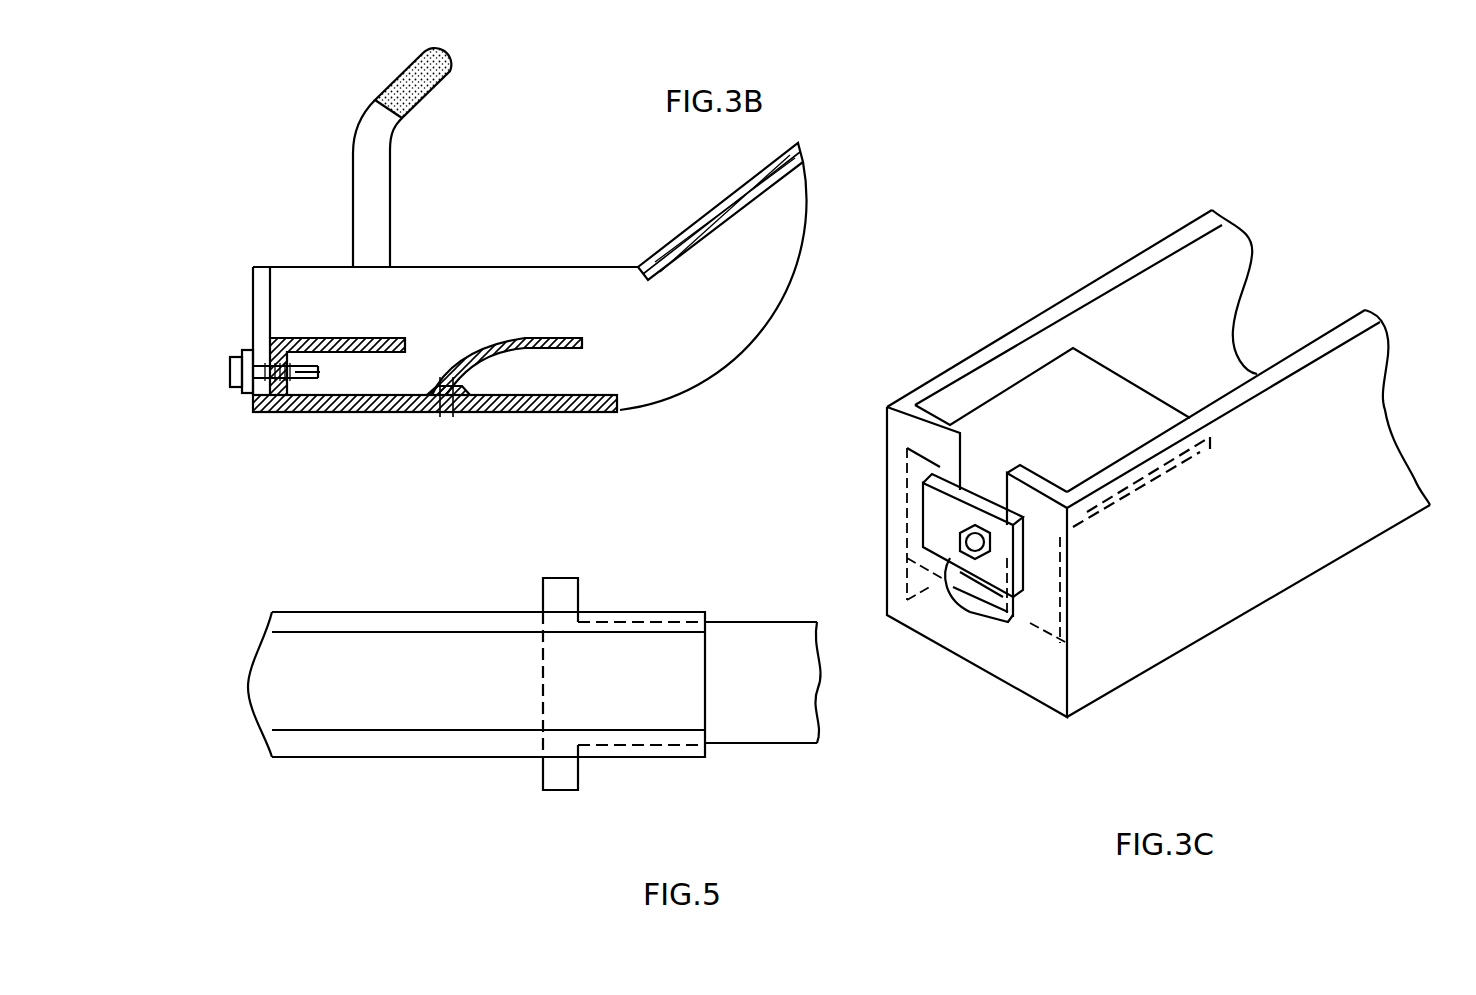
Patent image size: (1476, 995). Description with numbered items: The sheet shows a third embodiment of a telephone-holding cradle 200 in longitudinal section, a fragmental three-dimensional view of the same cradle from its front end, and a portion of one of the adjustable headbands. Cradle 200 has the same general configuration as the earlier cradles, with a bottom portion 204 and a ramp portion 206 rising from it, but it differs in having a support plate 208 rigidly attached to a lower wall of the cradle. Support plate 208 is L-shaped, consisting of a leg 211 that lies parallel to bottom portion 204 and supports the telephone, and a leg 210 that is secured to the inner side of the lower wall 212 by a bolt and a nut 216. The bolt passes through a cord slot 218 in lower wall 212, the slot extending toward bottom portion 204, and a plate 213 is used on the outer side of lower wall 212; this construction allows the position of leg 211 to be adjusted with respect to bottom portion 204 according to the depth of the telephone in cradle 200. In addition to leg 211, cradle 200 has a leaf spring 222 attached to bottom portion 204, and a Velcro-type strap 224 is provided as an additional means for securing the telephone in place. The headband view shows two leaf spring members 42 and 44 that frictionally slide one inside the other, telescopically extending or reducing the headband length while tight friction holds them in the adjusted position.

In FIG. 3B, the cradle 200 is at (318, 183).
In FIG. 3B, the strap 224 is at (433, 102).
In FIG. 3B, the support plate 208 is at (300, 278).
In FIG. 3B, the lower wall 212 is at (252, 300).
In FIG. 3C, the lower wall 212 is at (948, 612).
In FIG. 3B, the ramp portion 206 is at (768, 188).
In FIG. 3B, the bottom portion 204 is at (396, 413).
In FIG. 3B, the leg 211 is at (358, 338).
In FIG. 3B, the leg 210 is at (298, 413).
In FIG. 3B, the leaf spring 222 is at (525, 336).
In FIG. 5, the leaf spring member 44 is at (604, 612).
In FIG. 5, the leaf spring member 42 is at (738, 638).
In FIG. 3C, the plate 213 is at (932, 530).
In FIG. 3C, the nut 216 is at (977, 548).
In FIG. 3C, the cord slot 218 is at (975, 612).